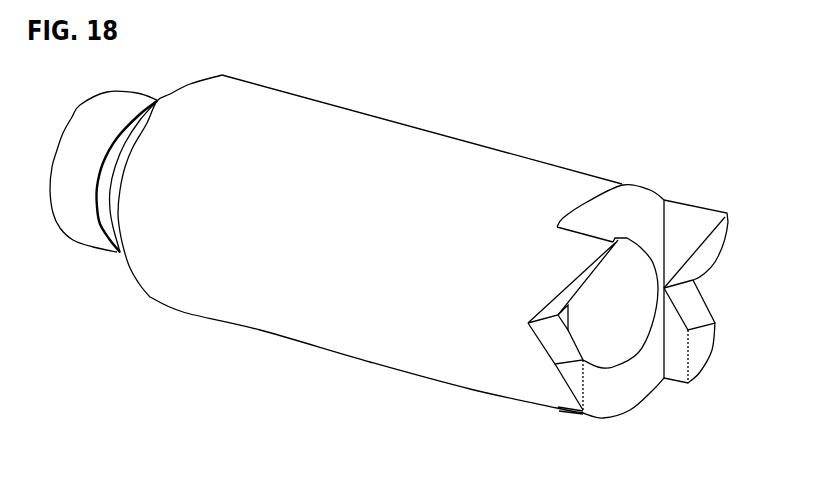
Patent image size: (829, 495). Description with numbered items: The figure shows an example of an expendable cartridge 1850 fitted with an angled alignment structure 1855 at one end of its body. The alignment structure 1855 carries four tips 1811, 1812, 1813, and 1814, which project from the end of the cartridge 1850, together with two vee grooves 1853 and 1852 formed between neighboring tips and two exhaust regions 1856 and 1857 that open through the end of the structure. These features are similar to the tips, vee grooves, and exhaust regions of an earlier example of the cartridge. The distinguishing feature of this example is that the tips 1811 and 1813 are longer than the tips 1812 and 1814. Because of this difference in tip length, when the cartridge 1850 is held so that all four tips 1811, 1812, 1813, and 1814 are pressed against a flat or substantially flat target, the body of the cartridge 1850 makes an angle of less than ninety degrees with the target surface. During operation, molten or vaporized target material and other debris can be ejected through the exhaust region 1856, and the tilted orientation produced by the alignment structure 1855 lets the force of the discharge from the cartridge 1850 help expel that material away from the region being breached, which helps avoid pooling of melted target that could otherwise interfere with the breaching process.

The expendable cartridge 1850 is at (195, 345).
The angled alignment structure 1855 is at (620, 256).
The exhaust region 1856 is at (627, 217).
The exhaust region 1857 is at (638, 380).
The tip 1811 is at (610, 247).
The tip 1812 is at (568, 377).
The tip 1813 is at (727, 213).
The tip 1814 is at (695, 352).
The vee groove 1852 is at (695, 281).
The vee groove 1853 is at (547, 320).